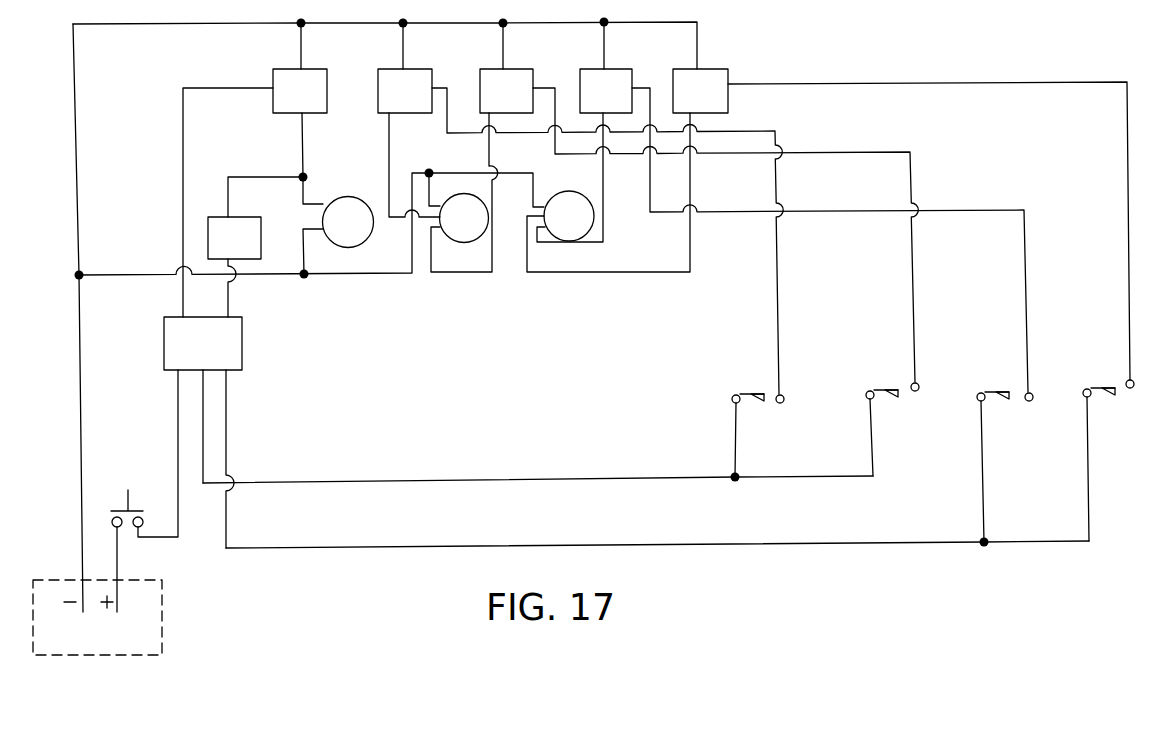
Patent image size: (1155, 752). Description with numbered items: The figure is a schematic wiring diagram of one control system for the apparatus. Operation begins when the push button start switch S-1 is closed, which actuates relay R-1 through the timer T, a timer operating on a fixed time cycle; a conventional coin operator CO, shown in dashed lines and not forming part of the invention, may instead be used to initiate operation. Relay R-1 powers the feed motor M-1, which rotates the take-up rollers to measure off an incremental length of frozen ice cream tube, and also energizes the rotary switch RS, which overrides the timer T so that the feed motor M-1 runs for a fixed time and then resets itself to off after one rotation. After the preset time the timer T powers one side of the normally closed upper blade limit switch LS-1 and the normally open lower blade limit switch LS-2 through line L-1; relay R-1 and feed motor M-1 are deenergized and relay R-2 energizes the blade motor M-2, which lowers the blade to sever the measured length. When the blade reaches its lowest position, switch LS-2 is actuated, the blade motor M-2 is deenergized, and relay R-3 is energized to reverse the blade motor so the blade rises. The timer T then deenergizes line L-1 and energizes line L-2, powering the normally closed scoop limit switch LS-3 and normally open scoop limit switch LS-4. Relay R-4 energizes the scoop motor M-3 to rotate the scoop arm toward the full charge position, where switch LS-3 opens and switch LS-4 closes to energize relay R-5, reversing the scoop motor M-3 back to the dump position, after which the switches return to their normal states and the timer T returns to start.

The relay R-1 is at (255, 170).
The relay R-2 is at (580, 208).
The relay R-3 is at (674, 202).
The relay R-4 is at (782, 207).
The relay R-5 is at (828, 224).
The rotary switch RS is at (255, 247).
The timer T is at (190, 432).
The feed motor M-1 is at (338, 225).
The blade motor M-2 is at (459, 208).
The scoop motor M-3 is at (569, 216).
The upper blade limit switch LS-1 is at (759, 435).
The lower blade limit switch LS-2 is at (894, 429).
The scoop limit switch LS-3 is at (1005, 467).
The scoop limit switch LS-4 is at (1111, 460).
The push button start switch S-1 is at (127, 495).
The line L-1 is at (385, 482).
The line L-2 is at (463, 545).
The coin operator CO is at (162, 618).